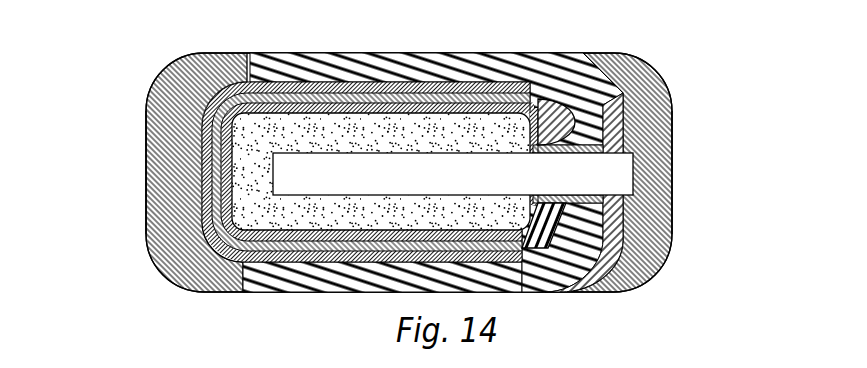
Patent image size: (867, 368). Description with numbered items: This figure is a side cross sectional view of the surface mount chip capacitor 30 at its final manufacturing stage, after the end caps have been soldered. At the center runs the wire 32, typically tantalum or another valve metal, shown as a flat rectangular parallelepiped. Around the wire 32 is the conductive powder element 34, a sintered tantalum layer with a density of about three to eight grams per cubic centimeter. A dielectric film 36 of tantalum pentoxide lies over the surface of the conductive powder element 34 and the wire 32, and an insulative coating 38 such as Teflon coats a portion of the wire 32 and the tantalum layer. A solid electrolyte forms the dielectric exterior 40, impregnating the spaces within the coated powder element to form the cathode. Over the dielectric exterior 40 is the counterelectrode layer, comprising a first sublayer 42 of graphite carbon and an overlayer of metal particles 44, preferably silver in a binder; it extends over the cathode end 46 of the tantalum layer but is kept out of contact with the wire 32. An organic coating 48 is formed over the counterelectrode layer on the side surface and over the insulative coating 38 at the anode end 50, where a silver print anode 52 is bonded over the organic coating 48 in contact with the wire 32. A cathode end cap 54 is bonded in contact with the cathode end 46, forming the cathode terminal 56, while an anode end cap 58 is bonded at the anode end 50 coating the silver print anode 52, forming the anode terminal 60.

The surface mount chip capacitor 30 is at (634, 42).
The wire 32 is at (622, 178).
The conductive powder element 34 is at (331, 203).
The dielectric film 36 is at (547, 202).
The insulative coating 38 is at (548, 212).
The dielectric exterior 40 is at (465, 100).
The first sublayer 42 is at (385, 90).
The overlayer of metal particles 44 is at (305, 85).
The cathode end 46 is at (234, 167).
The organic coating 48 is at (308, 287).
The anode end 50 is at (530, 145).
The silver print anode 52 is at (628, 283).
The cathode end cap 54 is at (190, 78).
The cathode terminal 56 is at (146, 210).
The anode end cap 58 is at (640, 78).
The anode terminal 60 is at (673, 113).